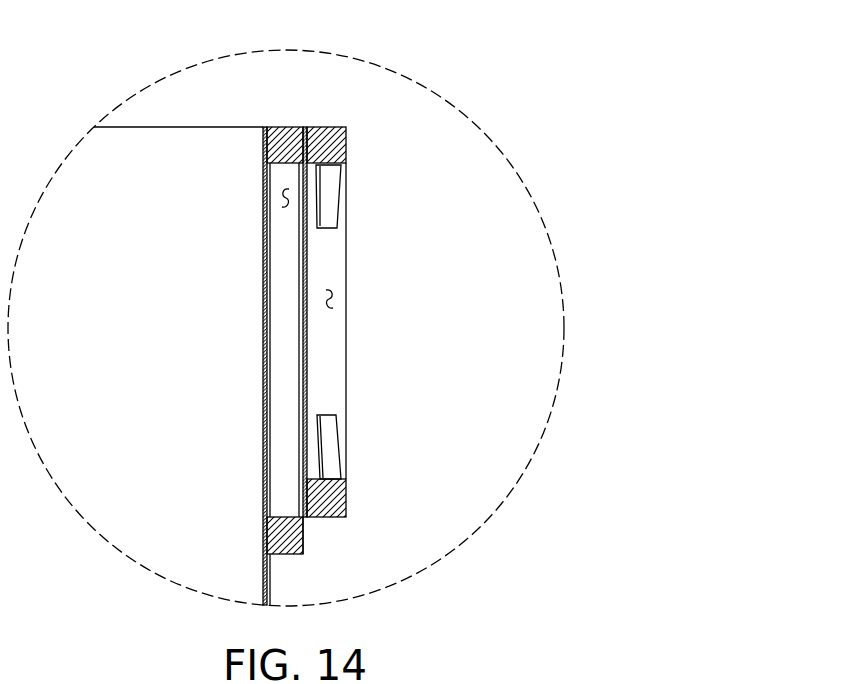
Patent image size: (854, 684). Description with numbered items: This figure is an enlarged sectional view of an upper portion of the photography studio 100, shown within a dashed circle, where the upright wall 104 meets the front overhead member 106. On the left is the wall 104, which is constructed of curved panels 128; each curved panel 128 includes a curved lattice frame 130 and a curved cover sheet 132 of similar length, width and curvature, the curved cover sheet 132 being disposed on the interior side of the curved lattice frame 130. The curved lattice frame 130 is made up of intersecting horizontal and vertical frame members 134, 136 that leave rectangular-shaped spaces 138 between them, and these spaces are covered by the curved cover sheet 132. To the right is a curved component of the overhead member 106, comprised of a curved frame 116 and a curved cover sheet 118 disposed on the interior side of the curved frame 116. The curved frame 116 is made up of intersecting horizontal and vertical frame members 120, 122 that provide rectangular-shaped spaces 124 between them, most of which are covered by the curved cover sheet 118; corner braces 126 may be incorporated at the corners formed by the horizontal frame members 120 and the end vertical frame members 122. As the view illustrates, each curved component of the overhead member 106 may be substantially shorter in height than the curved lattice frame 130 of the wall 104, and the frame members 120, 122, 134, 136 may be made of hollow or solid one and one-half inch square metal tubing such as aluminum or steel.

The photography studio 100 is at (351, 94).
The upright wall 104 is at (250, 507).
The front overhead member 106 is at (354, 229).
The curved frame 116 is at (346, 342).
The curved cover sheet 118 is at (301, 318).
The horizontal frame members 120 is at (347, 150).
The vertical frame members 122 is at (346, 267).
The rectangular-shaped spaces 124 is at (342, 302).
The corner braces 126 is at (341, 200).
The curved panels 128 is at (241, 292).
The curved lattice frame 130 is at (306, 533).
The curved cover sheet 132 is at (264, 240).
The horizontal frame members 134 is at (276, 144).
The vertical frame members 136 is at (288, 392).
The rectangular-shaped spaces 138 is at (280, 199).